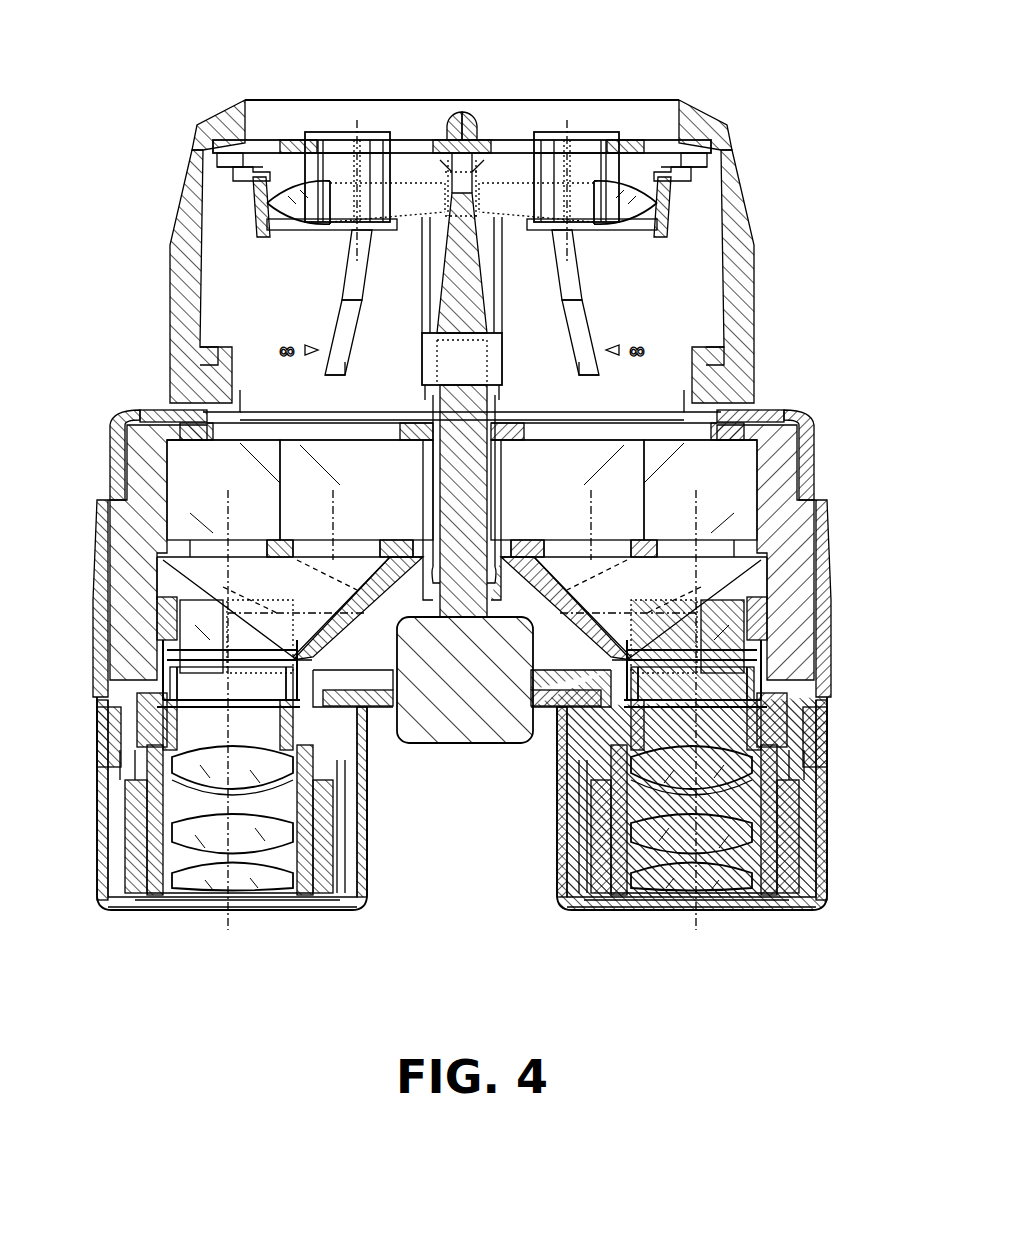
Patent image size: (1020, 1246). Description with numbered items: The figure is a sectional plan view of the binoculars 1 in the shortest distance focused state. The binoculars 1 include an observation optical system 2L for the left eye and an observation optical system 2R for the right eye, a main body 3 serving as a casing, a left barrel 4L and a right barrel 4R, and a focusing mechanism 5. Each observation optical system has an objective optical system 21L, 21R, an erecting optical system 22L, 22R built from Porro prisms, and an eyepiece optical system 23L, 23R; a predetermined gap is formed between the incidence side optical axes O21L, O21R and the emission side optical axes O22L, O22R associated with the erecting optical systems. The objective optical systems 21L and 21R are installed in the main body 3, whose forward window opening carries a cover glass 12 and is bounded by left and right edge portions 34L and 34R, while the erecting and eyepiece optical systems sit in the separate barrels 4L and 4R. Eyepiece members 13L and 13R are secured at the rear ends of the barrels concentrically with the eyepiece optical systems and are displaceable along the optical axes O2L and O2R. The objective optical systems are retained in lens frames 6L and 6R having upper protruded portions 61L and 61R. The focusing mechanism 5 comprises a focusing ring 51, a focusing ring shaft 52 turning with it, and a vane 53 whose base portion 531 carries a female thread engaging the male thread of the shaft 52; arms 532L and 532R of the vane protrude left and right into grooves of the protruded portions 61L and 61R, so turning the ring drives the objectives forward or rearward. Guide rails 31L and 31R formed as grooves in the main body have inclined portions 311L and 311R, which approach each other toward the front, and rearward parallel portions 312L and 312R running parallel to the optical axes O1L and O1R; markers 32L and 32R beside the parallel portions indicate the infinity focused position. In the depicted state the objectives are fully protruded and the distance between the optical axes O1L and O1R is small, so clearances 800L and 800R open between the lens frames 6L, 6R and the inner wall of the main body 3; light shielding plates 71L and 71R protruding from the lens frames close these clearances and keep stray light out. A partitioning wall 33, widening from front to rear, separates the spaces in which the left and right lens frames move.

The binoculars 1 is at (497, 55).
The main body 3 is at (750, 166).
The left edge portion of forward opening 34L is at (225, 135).
The right edge portion of forward opening 34R is at (700, 132).
The cover glass 12 is at (274, 143).
The left clearance 800L is at (232, 160).
The right clearance 800R is at (690, 160).
The left light shielding plate 71L is at (230, 178).
The right light shielding plate 71R is at (694, 178).
The left lens frame 6L is at (258, 222).
The right lens frame 6R is at (666, 222).
The left protruded portion 61L is at (336, 155).
The right protruded portion 61R is at (588, 155).
The optical axis of left objective optical system O1L is at (357, 118).
The optical axis of right objective optical system O1R is at (567, 118).
The left objective optical system 21L is at (298, 212).
The right objective optical system 21R is at (626, 212).
The left guide rail 31L is at (285, 302).
The right guide rail 31R is at (637, 302).
The left inclined portion 311L is at (347, 284).
The right inclined portion 311R is at (577, 284).
The left parallel portion 312L is at (311, 337).
The right parallel portion 312R is at (612, 337).
The left marker 32L is at (320, 360).
The right marker 32R is at (604, 360).
The focusing mechanism 5 is at (462, 453).
The vane 53 is at (414, 296).
The partitioning wall 33 is at (468, 280).
The base portion of vane 531 is at (503, 352).
The left arm of vane 532L is at (430, 172).
The right arm of vane 532R is at (520, 168).
The focusing ring shaft 52 is at (455, 481).
The focusing ring 51 is at (470, 712).
The left barrel 4L is at (88, 628).
The right barrel 4R is at (840, 626).
The left erecting optical system 22L is at (300, 560).
The right erecting optical system 22R is at (624, 560).
The left incidence side optical axis O21L is at (372, 588).
The right incidence side optical axis O21R is at (560, 585).
The left emission side optical axis O22L is at (228, 690).
The right emission side optical axis O22R is at (696, 690).
The left eyepiece optical system 23L is at (133, 836).
The right eyepiece optical system 23R is at (840, 820).
The left eyepiece member 13L is at (367, 888).
The right eyepiece member 13R is at (558, 895).
The observation optical system for left eye 2L is at (205, 906).
The observation optical system for right eye 2R is at (673, 905).
The left eyepiece optical axis O2L is at (234, 932).
The right eyepiece optical axis O2R is at (708, 930).